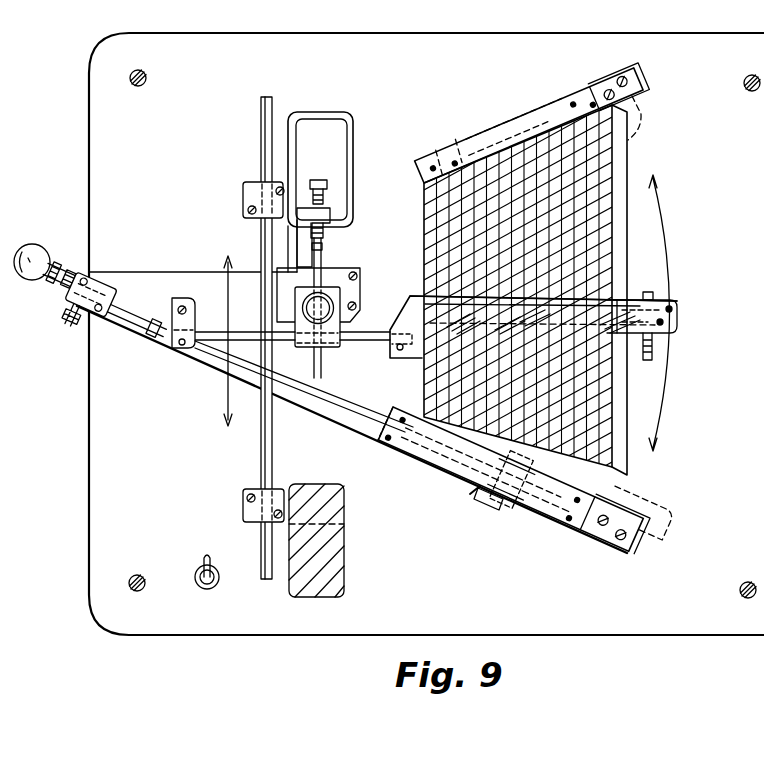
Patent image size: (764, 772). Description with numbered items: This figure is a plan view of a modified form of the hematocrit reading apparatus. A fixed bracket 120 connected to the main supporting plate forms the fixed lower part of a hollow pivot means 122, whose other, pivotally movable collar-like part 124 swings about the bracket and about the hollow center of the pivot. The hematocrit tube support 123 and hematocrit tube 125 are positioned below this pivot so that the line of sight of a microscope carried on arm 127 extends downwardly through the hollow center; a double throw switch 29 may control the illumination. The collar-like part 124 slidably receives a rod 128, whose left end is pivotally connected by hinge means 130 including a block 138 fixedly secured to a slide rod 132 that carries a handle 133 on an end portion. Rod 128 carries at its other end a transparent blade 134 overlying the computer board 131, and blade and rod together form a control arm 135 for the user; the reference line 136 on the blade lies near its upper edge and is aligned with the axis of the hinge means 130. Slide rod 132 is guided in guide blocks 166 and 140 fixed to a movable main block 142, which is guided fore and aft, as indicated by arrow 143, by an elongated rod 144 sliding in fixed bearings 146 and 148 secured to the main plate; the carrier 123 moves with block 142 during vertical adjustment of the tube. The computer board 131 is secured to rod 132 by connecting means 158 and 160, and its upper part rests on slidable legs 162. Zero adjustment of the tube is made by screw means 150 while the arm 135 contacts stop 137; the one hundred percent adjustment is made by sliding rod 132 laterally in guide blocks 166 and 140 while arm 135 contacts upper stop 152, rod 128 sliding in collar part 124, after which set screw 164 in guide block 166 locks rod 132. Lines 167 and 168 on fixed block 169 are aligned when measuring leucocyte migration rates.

The double throw switch 29 is at (203, 560).
The fixed bracket 120 is at (362, 279).
The hollow pivot means 122 is at (350, 326).
The hematocrit tube support 123 is at (327, 264).
The collar-like part 124 is at (335, 346).
The hematocrit tube 125 is at (321, 250).
The arm 127 is at (345, 548).
The rod 128 is at (241, 337).
The hinge means 130 is at (176, 304).
The computer board 131 is at (606, 176).
The slide rod 132 is at (137, 322).
The handle 133 is at (40, 250).
The transparent blade 134 is at (497, 343).
The control arm 135 is at (694, 311).
The reference line 136 is at (620, 303).
The stop 137 is at (640, 142).
The block 138 is at (168, 344).
The guide block 140 is at (470, 477).
The movable main block 142 is at (148, 272).
The arrow 143 is at (228, 400).
The elongated rod 144 is at (266, 138).
The fixed bearing 146 is at (257, 508).
The fixed bearing 148 is at (250, 192).
The screw means 150 is at (325, 183).
The upper stop 152 is at (640, 82).
The connecting means 158 is at (381, 448).
The connecting means 160 is at (560, 530).
The slidable leg 162 is at (575, 85).
The set screw 164 is at (78, 336).
The guide block 166 is at (77, 300).
The line 167 is at (508, 490).
The line 168 is at (493, 503).
The fixed block 169 is at (477, 497).